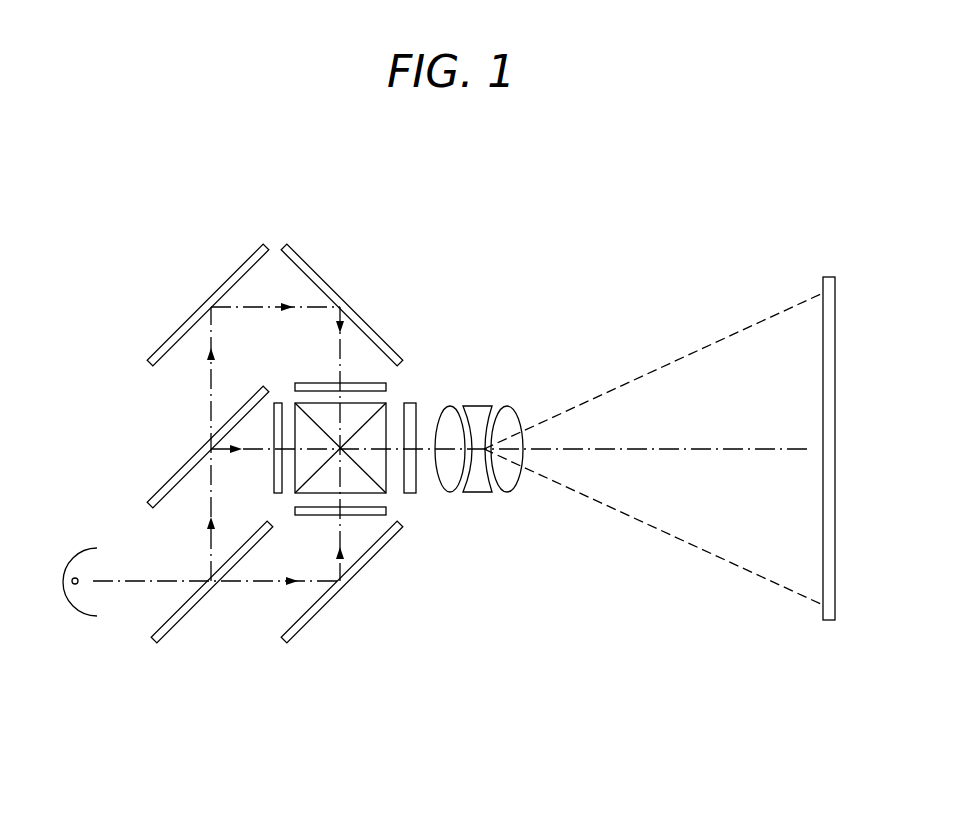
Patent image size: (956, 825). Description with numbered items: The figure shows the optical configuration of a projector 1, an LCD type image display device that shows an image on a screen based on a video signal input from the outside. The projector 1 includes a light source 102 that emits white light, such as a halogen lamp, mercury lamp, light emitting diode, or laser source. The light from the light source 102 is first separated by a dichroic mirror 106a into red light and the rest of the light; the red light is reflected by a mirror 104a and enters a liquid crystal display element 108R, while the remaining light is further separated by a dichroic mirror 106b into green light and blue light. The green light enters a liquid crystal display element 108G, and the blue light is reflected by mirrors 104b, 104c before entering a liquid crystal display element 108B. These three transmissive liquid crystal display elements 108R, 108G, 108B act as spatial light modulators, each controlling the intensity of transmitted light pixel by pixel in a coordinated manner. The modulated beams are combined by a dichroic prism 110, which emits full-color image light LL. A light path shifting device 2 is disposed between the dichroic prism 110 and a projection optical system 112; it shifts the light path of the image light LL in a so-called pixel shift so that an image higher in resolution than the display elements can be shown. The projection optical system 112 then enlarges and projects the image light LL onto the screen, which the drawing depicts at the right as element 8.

The projector 1 is at (701, 219).
The light path shifting device 2 is at (418, 480).
The screen 8 is at (830, 623).
The light source 102 is at (78, 613).
The mirror 104a is at (313, 623).
The mirror 104b is at (223, 282).
The mirror 104c is at (323, 278).
The dichroic mirror 106a is at (182, 623).
The dichroic mirror 106b is at (167, 478).
The liquid crystal display element 108R is at (320, 517).
The liquid crystal display element 108G is at (272, 465).
The liquid crystal display element 108B is at (385, 387).
The dichroic prism 110 is at (389, 407).
The projection optical system 112 is at (522, 498).
The image light LL is at (392, 448).